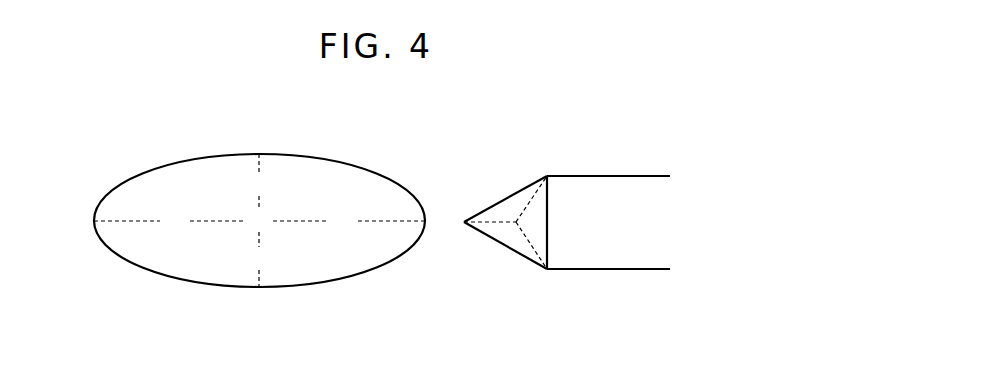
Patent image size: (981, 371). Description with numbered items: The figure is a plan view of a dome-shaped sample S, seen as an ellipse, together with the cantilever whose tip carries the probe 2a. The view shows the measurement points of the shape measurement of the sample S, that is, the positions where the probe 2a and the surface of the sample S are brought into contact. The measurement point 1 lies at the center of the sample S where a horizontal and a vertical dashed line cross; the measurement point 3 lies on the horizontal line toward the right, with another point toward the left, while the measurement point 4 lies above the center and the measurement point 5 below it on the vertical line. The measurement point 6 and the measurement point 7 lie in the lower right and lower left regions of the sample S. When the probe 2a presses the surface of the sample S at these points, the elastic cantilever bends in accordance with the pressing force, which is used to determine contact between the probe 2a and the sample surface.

The sample S is at (117, 185).
The measurement point 1 is at (259, 221).
The measurement point 3 is at (343, 221).
The measurement point 4 is at (259, 184).
The measurement point 5 is at (259, 259).
The measurement point 6 is at (302, 241).
The measurement point 7 is at (177, 257).
The probe 2a is at (505, 198).